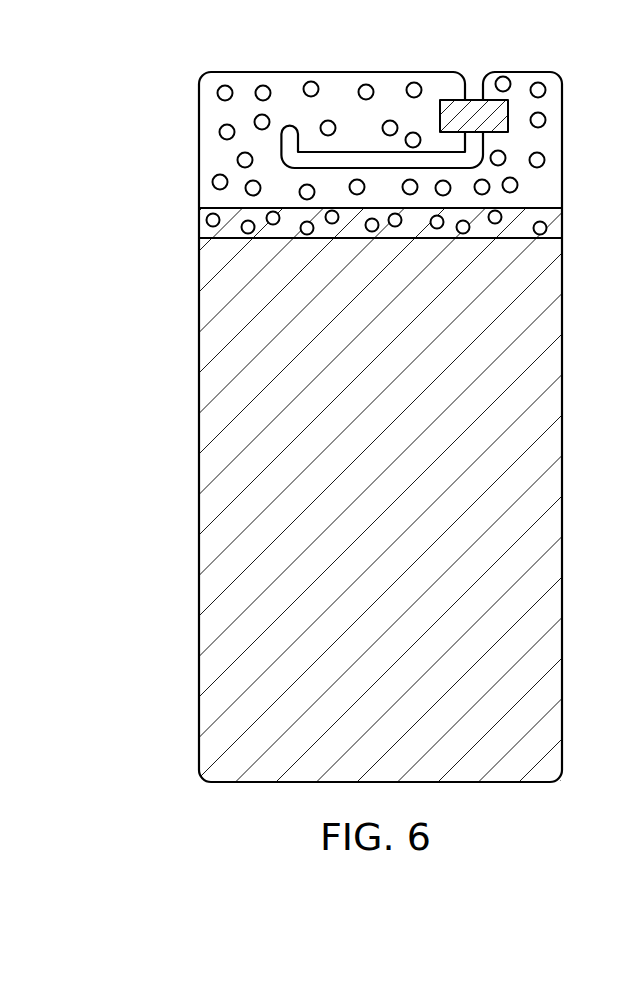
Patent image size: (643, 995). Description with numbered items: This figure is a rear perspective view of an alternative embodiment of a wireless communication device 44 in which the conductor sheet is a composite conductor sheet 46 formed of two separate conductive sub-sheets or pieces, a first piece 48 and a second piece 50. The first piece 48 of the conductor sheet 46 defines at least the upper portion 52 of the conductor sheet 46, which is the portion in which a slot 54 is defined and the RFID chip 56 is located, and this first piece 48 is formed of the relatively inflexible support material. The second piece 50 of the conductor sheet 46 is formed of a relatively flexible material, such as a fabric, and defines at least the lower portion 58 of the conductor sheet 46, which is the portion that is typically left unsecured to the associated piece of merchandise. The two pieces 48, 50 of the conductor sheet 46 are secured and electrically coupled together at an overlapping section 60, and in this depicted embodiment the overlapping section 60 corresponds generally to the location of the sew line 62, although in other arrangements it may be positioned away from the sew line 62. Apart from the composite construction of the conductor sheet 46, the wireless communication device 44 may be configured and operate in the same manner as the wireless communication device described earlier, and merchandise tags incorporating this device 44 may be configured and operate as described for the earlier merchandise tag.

The wireless communication device 44 is at (229, 797).
The composite conductor sheet 46 is at (186, 570).
The first piece 48 is at (212, 82).
The second piece 50 is at (542, 485).
The upper portion 52 is at (185, 72).
The slot 54 is at (375, 150).
The RFID chip 56 is at (470, 100).
The lower portion 58 is at (185, 782).
The overlapping section 60 is at (555, 220).
The sew line 62 is at (548, 231).